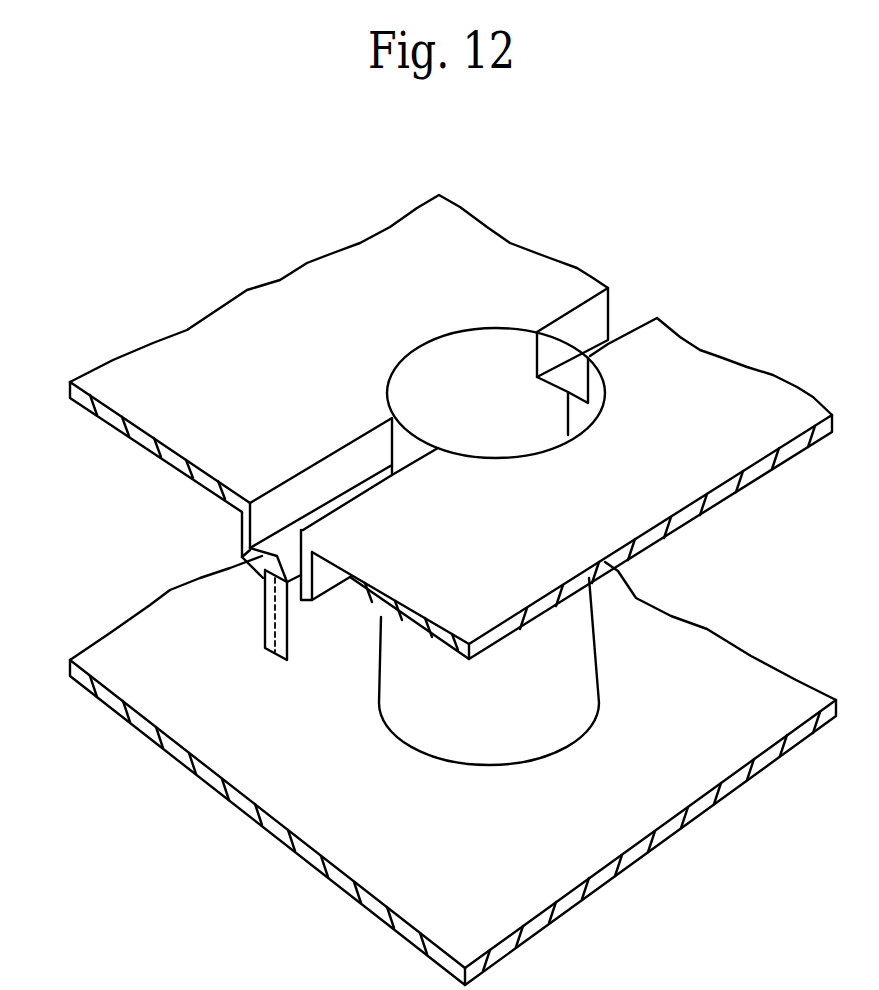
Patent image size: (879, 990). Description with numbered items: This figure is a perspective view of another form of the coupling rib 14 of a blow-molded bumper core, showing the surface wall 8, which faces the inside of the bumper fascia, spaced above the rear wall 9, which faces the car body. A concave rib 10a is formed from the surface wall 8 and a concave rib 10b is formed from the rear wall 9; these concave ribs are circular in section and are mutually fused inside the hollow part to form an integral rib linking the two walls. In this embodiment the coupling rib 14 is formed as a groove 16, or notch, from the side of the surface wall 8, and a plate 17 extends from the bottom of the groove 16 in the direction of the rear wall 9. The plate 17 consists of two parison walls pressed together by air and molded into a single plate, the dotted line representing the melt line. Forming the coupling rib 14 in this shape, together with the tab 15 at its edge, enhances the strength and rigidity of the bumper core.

The surface wall 8 is at (300, 308).
The concave rib 10a is at (457, 367).
The bent tab of upper plate 15 is at (280, 510).
The groove 16 is at (250, 546).
The coupling rib 14 is at (218, 591).
The plate 17 is at (262, 627).
The rear wall 9 is at (290, 773).
The concave rib 10b is at (452, 710).